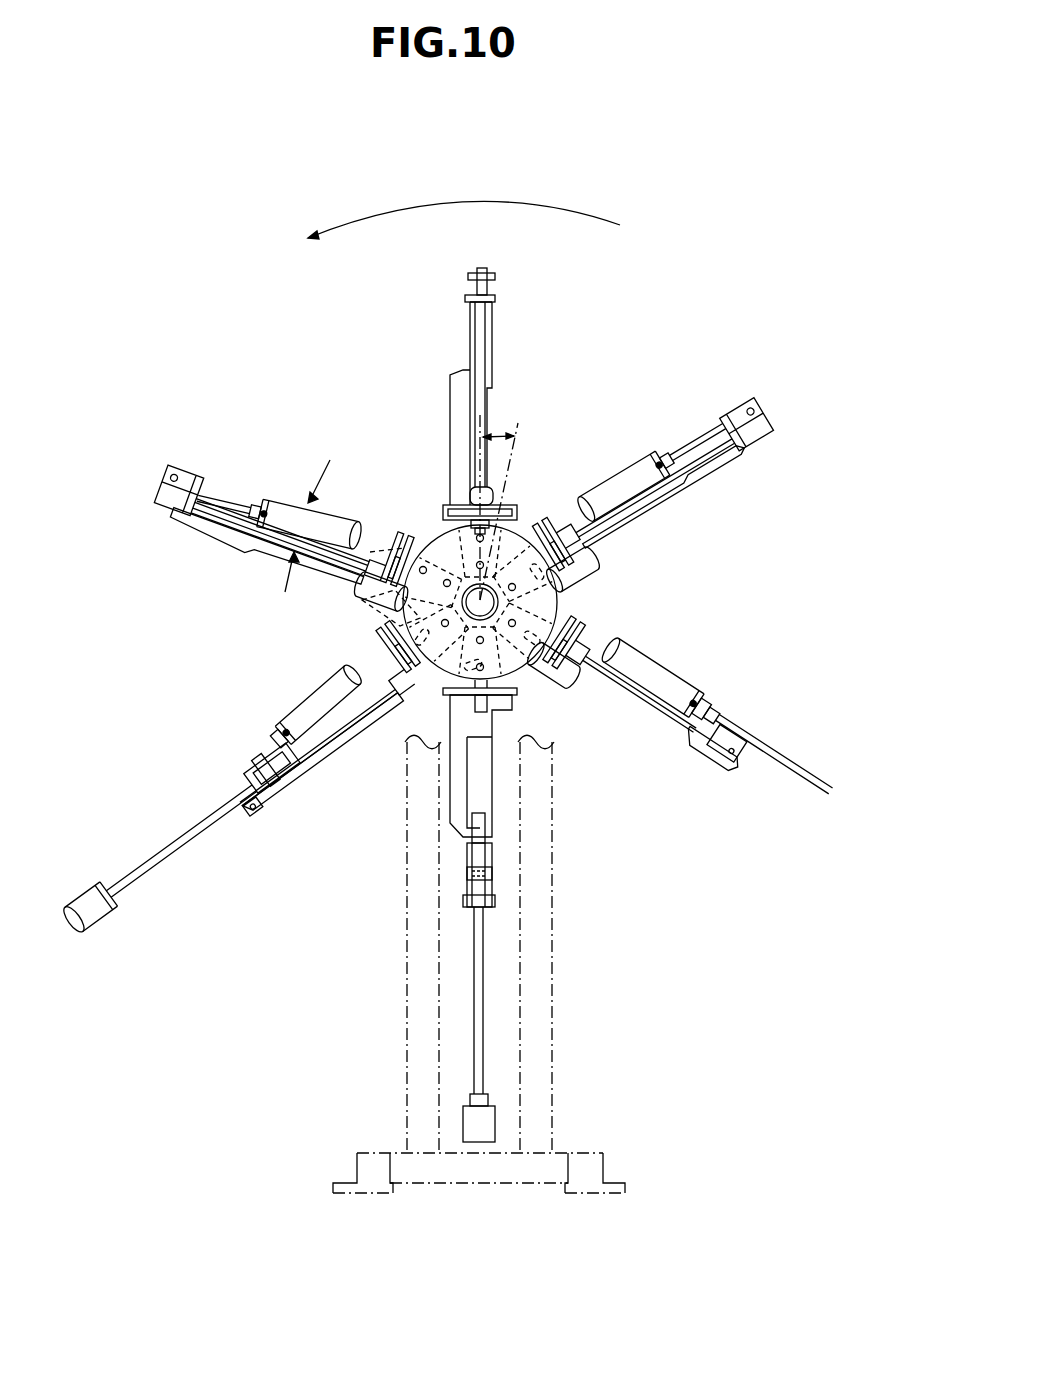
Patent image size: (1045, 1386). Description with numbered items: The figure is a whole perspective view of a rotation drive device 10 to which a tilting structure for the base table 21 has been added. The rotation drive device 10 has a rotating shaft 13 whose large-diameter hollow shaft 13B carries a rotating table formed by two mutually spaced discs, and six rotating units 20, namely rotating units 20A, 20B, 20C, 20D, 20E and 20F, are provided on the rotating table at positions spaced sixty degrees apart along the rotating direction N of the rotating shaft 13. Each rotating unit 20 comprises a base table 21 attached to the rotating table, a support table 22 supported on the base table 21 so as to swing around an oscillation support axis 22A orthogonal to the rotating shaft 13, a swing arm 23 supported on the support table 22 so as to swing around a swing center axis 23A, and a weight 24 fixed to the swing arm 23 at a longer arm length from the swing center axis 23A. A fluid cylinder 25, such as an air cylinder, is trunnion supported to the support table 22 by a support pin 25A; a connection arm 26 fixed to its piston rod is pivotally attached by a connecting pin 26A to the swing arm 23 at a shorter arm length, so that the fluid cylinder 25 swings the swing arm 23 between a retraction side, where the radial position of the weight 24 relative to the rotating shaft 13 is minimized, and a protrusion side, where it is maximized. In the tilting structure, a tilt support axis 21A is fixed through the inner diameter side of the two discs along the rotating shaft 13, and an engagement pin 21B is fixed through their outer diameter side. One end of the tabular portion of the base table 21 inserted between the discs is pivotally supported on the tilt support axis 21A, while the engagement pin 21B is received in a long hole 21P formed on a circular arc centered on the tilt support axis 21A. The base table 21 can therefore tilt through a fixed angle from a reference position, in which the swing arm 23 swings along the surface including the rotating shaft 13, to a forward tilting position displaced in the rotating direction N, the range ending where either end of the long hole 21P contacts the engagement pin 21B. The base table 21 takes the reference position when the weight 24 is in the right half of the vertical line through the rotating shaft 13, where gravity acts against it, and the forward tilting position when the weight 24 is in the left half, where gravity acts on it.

The rotation drive device 10 is at (279, 370).
The rotating shaft 13 is at (513, 540).
The large-diameter hollow shaft 13B is at (528, 550).
The rotating unit 20 is at (500, 322).
The rotating unit 20A is at (500, 355).
The rotating unit 20B is at (270, 484).
The rotating unit 20C is at (247, 710).
The rotating unit 20D is at (447, 892).
The rotating unit 20E is at (665, 752).
The rotating unit 20F is at (670, 430).
The base table 21 is at (412, 644).
The tilt support axis 21A is at (447, 579).
The engagement pin 21B is at (423, 566).
The long hole 21P is at (405, 617).
The support table 22 is at (345, 730).
The oscillation support axis 22A is at (398, 675).
The swing arm 23 is at (188, 832).
The swing center axis 23A is at (246, 806).
The weight 24 is at (98, 922).
The fluid cylinder 25 is at (322, 690).
The support pin 25A is at (284, 735).
The connection arm 26 is at (268, 745).
The connecting pin 26A is at (250, 765).
The rotating direction N is at (404, 205).